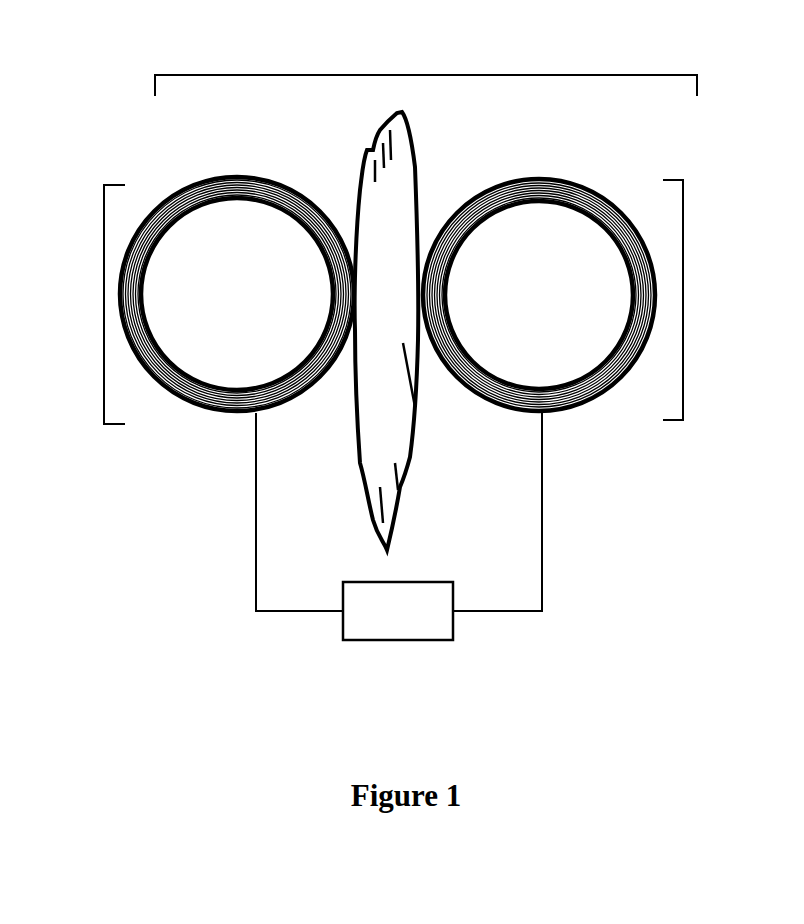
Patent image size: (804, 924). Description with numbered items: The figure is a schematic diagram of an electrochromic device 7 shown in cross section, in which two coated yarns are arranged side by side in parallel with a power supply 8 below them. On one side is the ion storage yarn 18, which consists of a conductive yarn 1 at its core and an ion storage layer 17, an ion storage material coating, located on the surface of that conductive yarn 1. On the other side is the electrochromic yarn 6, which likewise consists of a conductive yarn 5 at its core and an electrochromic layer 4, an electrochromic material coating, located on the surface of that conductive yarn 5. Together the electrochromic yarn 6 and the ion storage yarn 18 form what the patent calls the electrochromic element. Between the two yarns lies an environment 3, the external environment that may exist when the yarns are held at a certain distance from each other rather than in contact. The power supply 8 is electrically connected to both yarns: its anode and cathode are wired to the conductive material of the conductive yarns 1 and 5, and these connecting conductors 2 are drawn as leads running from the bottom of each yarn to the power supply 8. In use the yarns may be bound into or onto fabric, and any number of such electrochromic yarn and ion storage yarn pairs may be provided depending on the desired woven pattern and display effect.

The conductive yarn 1 is at (258, 268).
The electrical conductor wire 2 is at (542, 545).
The environment 3 is at (357, 178).
The electrochromic layer 4 is at (539, 196).
The conductive yarn 5 is at (540, 348).
The electrochromic yarn 6 is at (683, 300).
The electrochromic device 7 is at (425, 75).
The power supply 8 is at (405, 642).
The ion storage layer 17 is at (183, 410).
The ion storage yarn 18 is at (104, 304).